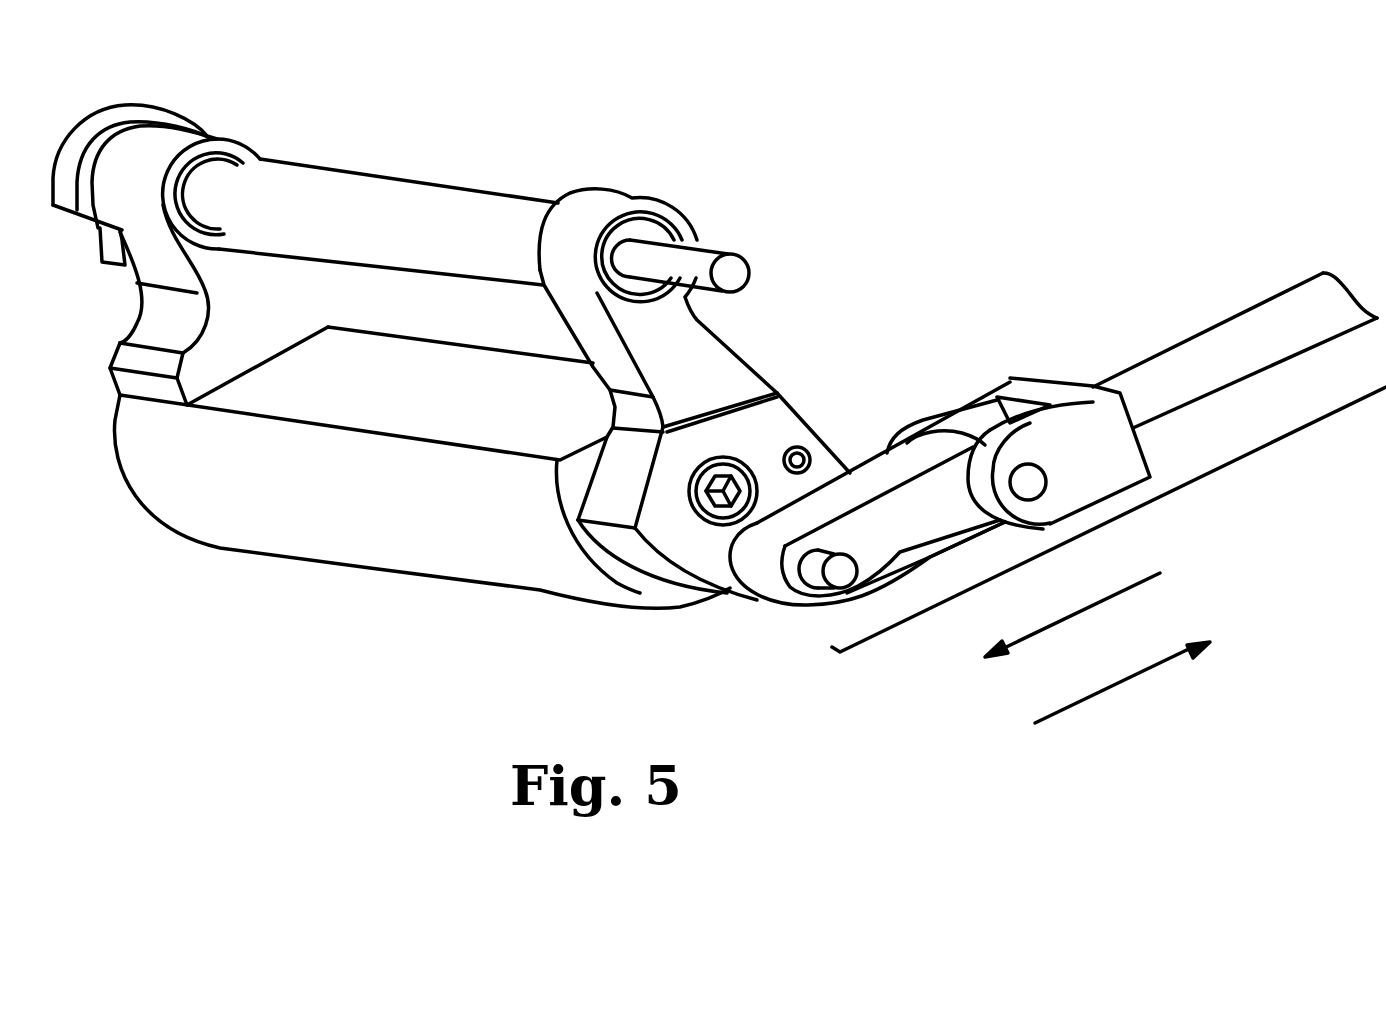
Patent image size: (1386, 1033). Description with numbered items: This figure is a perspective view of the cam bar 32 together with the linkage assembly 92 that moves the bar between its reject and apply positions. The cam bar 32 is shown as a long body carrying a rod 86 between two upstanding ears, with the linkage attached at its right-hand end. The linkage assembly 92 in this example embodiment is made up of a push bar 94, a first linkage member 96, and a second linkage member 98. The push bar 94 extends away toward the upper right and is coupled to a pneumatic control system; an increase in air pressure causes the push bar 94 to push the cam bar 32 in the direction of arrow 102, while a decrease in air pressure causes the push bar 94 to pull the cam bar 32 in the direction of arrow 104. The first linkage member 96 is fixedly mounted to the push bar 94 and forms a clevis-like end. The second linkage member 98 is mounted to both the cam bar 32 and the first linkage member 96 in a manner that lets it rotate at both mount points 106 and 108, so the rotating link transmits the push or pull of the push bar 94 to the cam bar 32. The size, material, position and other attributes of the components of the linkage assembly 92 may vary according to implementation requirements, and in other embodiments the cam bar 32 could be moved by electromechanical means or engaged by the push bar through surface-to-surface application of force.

The cam bar 32 is at (378, 570).
The rod 86 is at (422, 218).
The linkage assembly 92 is at (1108, 516).
The push bar 94 is at (1222, 328).
The first linkage member 96 is at (1010, 377).
The second linkage member 98 is at (868, 455).
The arrow 102 is at (1100, 600).
The arrow 104 is at (1119, 688).
The mount point 106 is at (857, 560).
The mount point 108 is at (1046, 480).